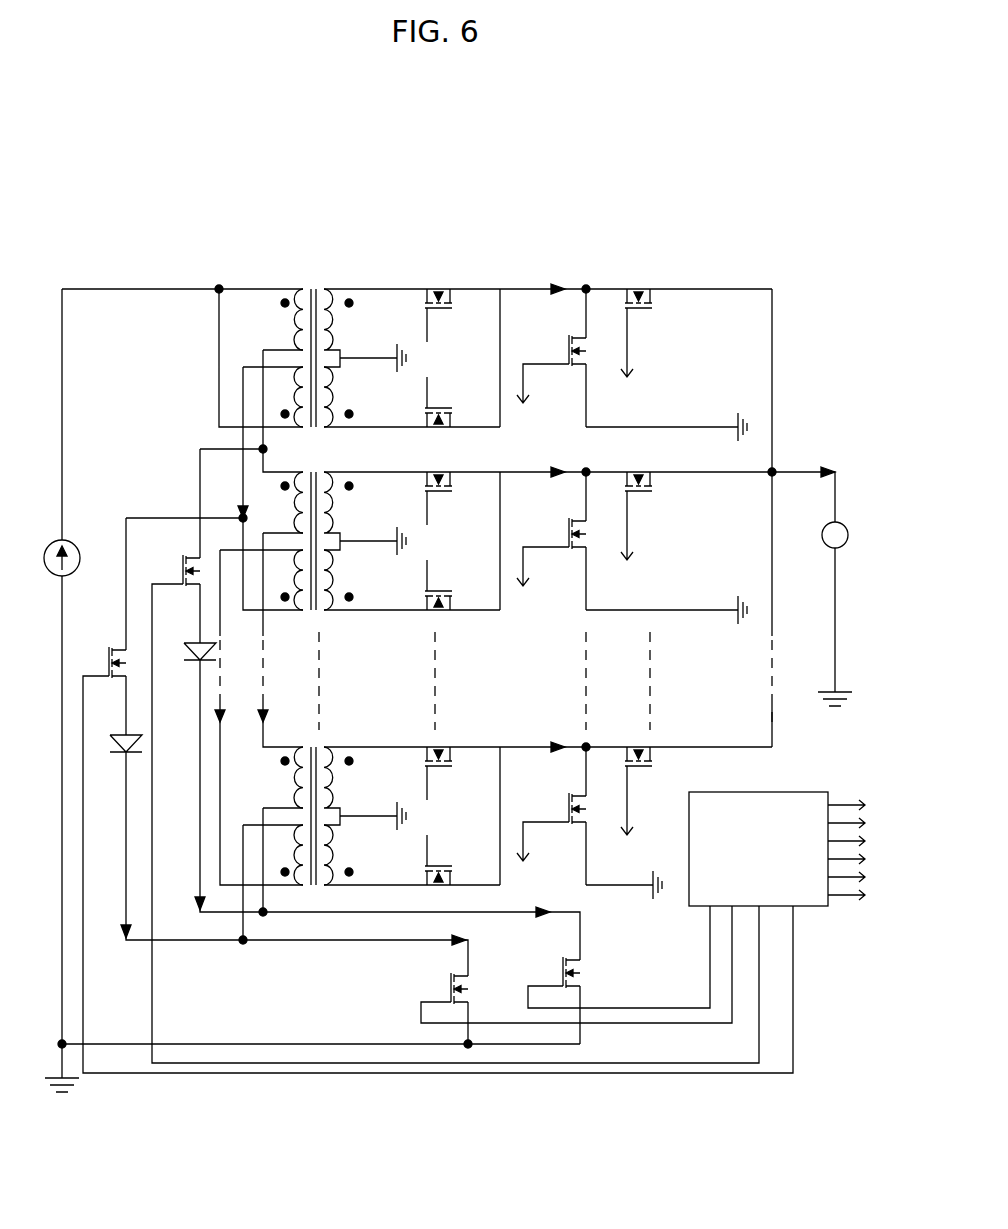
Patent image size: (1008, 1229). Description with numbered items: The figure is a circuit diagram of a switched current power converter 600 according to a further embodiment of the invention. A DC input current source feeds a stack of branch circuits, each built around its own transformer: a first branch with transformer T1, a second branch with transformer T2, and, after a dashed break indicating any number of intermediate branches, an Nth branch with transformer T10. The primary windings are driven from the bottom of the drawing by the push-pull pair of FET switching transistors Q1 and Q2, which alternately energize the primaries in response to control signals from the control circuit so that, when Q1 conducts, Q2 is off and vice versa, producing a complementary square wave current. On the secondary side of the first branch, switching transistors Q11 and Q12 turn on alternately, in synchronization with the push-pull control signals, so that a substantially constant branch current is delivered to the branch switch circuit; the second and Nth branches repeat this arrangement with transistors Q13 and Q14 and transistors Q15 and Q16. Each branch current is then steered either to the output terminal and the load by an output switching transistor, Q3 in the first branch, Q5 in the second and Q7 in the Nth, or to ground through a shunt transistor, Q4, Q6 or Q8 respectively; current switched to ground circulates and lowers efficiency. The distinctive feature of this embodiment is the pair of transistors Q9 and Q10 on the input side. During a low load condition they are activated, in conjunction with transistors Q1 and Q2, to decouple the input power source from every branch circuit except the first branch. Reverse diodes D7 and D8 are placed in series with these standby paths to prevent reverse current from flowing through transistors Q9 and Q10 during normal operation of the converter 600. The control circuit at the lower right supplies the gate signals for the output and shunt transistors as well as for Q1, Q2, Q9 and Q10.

The switched current power converter 600 is at (440, 185).
The transformer of first branch T1 is at (331, 358).
The transformer of second branch T2 is at (331, 541).
The transformer of Nth branch T10 is at (329, 816).
The FET switching transistor Q1 is at (616, 975).
The FET switching transistor Q2 is at (562, 977).
The switching transistor Q3 is at (648, 333).
The switching transistor Q4 is at (551, 369).
The output switch transistor Q5 is at (648, 516).
The output switch transistor Q6 is at (551, 552).
The output switch transistor Q7 is at (648, 791).
The output switch transistor Q8 is at (551, 827).
The transistor Q9 is at (453, 809).
The transistor Q10 is at (438, 795).
The switching transistor Q11 is at (448, 315).
The switching transistor Q12 is at (448, 402).
The rectifier transistor Q13 is at (448, 498).
The rectifier transistor Q14 is at (448, 585).
The rectifier transistor Q15 is at (448, 773).
The rectifier transistor Q16 is at (448, 860).
The reverse diode D7 is at (282, 826).
The reverse diode D8 is at (376, 772).